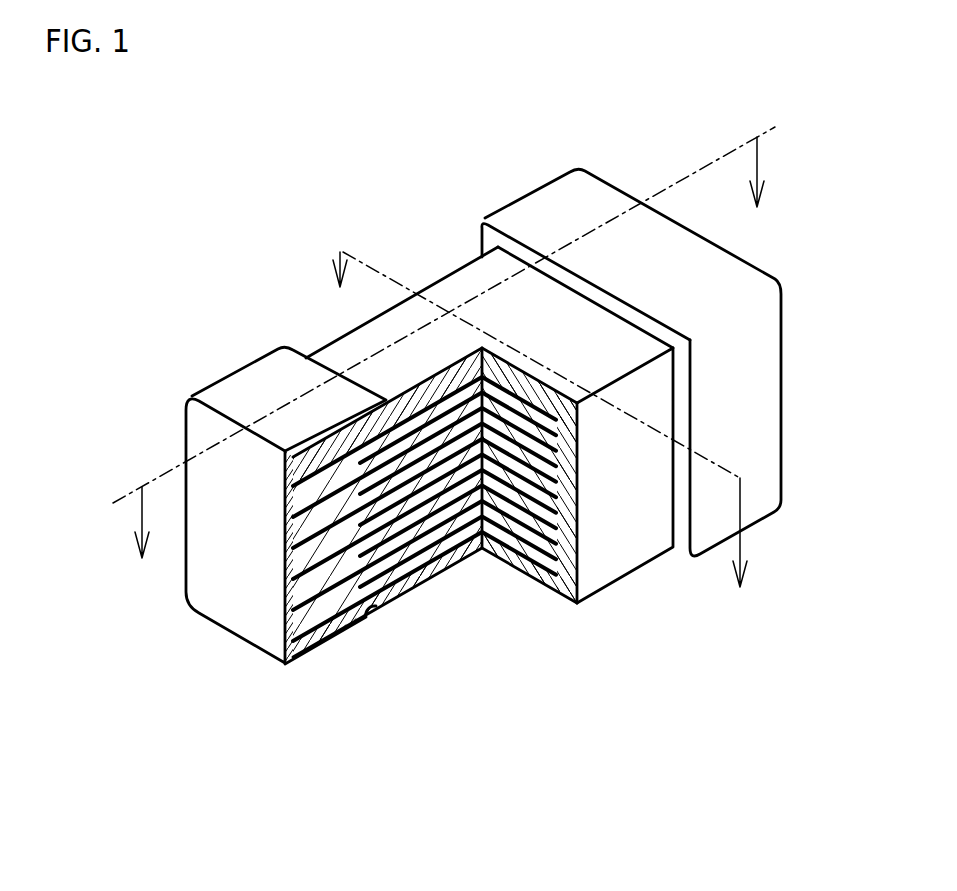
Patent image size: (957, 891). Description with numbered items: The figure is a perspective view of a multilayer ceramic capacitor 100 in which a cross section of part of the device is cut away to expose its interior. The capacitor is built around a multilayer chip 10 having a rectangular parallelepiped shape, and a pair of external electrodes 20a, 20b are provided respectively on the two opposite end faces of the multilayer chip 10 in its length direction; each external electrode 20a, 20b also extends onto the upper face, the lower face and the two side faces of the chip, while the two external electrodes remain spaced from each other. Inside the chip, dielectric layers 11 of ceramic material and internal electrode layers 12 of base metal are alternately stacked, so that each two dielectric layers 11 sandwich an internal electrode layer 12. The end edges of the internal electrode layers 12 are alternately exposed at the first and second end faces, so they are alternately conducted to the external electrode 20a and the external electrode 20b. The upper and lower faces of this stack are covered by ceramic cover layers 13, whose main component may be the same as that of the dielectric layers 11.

The multilayer ceramic capacitor 100 is at (882, 112).
The multilayer chip 10 is at (328, 342).
The dielectric layer 11 is at (413, 533).
The internal electrode layer 12 is at (445, 507).
The cover layer 13 is at (452, 290).
The external electrode 20a is at (217, 381).
The external electrode 20b is at (538, 218).